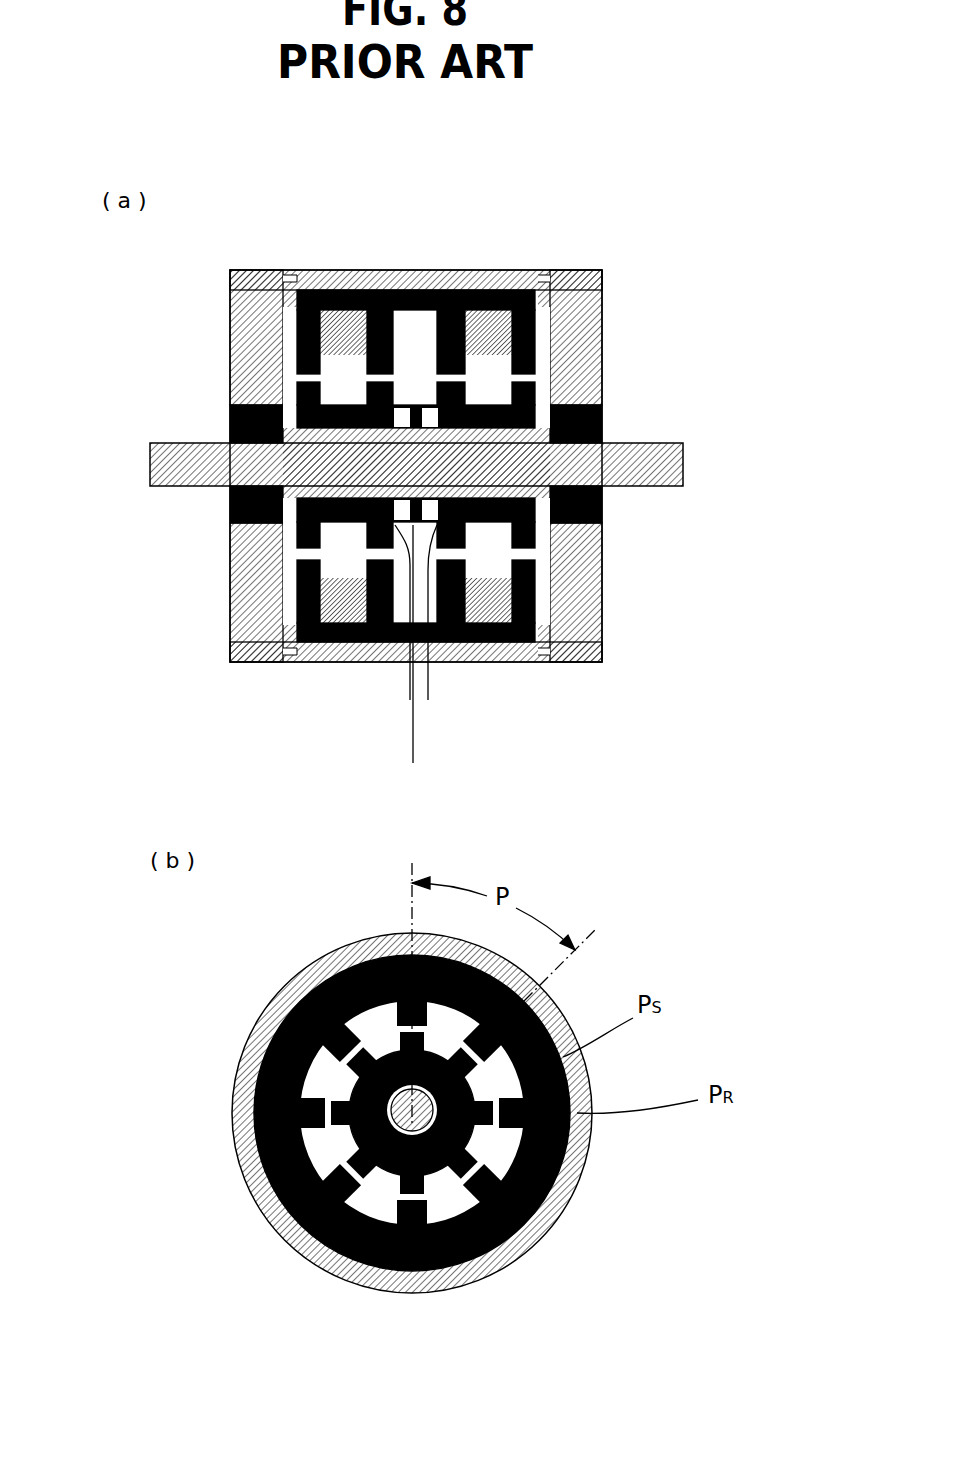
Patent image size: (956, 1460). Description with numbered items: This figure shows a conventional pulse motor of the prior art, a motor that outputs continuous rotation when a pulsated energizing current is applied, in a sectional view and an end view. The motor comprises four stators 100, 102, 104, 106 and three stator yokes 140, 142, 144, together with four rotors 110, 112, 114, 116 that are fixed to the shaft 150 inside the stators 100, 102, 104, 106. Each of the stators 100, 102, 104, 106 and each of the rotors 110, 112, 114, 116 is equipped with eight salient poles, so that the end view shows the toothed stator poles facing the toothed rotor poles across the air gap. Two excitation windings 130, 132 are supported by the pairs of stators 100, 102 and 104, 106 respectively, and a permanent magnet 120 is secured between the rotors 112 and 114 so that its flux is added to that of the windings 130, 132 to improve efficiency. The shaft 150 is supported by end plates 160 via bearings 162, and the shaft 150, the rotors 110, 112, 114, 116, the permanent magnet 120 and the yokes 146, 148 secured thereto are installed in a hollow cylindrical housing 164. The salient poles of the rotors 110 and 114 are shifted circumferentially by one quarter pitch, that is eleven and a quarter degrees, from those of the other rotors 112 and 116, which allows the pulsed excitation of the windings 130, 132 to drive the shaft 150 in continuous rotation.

The stator 100 is at (298, 288).
The stator 102 is at (372, 288).
The stator 104 is at (458, 288).
The stator 106 is at (528, 288).
The rotor 110 is at (305, 546).
The rotor 112 is at (410, 700).
The rotor 114 is at (428, 700).
The rotor 116 is at (560, 523).
The permanent magnet 120 is at (413, 763).
The excitation winding 130 is at (352, 602).
The excitation winding 132 is at (488, 597).
The stator yoke 140 is at (348, 288).
The stator yoke 142 is at (425, 288).
The stator yoke 144 is at (502, 288).
The yoke 146 is at (255, 503).
The yoke 148 is at (605, 500).
The shaft 150 is at (655, 462).
The end plate 160 is at (570, 303).
The bearing 162 is at (602, 425).
The housing 164 is at (310, 650).